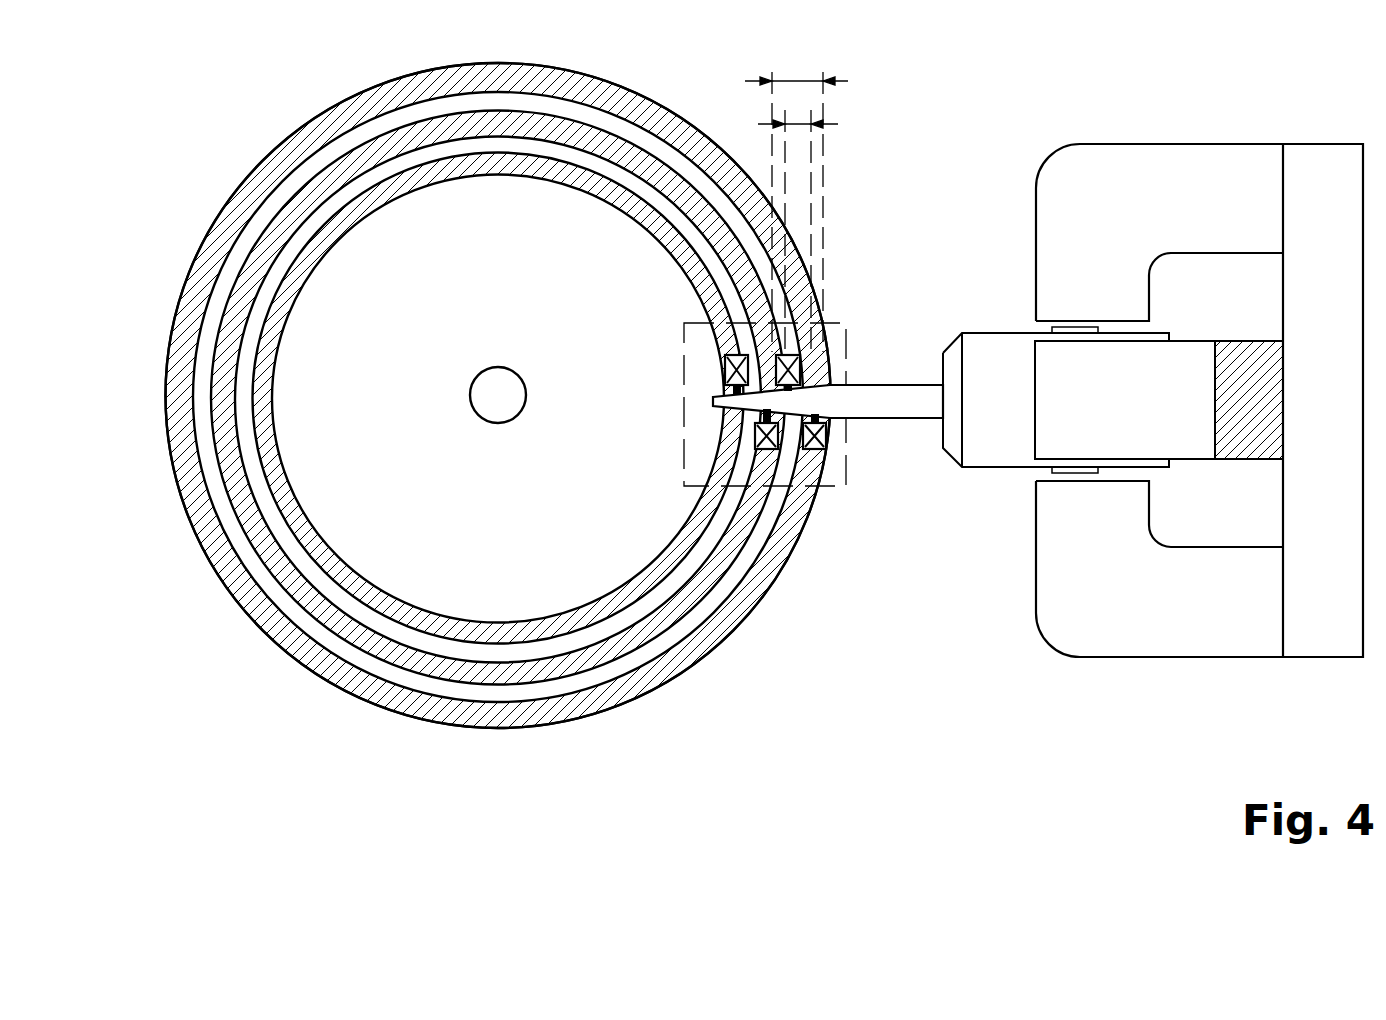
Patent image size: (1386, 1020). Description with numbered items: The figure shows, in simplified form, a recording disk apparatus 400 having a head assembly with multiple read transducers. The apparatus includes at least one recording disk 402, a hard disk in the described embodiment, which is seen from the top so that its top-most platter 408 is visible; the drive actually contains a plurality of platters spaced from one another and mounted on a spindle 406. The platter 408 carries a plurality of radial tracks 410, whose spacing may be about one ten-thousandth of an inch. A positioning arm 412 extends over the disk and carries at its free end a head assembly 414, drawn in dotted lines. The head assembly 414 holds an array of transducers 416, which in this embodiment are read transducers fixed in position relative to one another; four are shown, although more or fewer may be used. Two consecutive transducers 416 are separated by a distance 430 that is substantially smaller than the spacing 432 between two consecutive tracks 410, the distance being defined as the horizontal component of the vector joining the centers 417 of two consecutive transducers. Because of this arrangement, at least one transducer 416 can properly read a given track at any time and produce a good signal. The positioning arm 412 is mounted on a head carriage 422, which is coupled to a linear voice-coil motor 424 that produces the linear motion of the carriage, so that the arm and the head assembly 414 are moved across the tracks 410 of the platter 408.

The recording disk apparatus 400 is at (977, 685).
The recording disk 402 is at (697, 664).
The spindle 406 is at (517, 375).
The platter 408 is at (638, 275).
The radial tracks 410 is at (585, 72).
The positioning arm 412 is at (860, 385).
The head assembly 414 is at (832, 320).
The transducers 416 is at (725, 372).
The centers of transducers 417 is at (826, 436).
The head carriage 422 is at (993, 470).
The linear voice-coil motor 424 is at (1152, 144).
The distance between transducers 430 is at (800, 124).
The spacing between tracks 432 is at (800, 80).